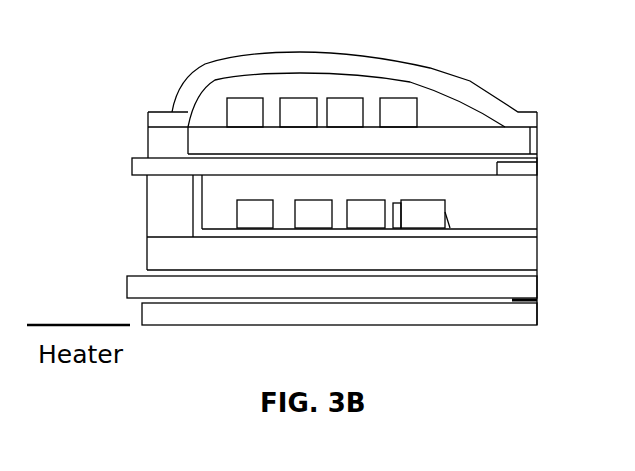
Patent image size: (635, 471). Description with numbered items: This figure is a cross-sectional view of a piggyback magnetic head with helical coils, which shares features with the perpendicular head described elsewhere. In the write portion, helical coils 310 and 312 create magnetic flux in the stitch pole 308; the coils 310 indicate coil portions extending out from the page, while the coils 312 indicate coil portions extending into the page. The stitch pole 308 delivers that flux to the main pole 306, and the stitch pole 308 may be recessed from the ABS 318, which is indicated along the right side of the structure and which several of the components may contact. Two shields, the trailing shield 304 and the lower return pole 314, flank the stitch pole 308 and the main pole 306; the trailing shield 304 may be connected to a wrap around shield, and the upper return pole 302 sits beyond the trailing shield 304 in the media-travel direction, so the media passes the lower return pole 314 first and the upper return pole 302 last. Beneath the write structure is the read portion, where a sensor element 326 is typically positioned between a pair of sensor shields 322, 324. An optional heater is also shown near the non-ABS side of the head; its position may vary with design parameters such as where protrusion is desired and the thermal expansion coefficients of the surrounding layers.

The upper return pole 302 is at (472, 83).
The trailing shield 304 is at (538, 140).
The main pole 306 is at (538, 163).
The stitch pole 308 is at (487, 176).
The helical coils 310 is at (226, 126).
The helical coils 312 is at (240, 198).
The lower return pole 314 is at (378, 265).
The ABS 318 is at (539, 242).
The sensor shield 322 is at (127, 277).
The sensor shield 324 is at (140, 314).
The sensor element 326 is at (534, 298).